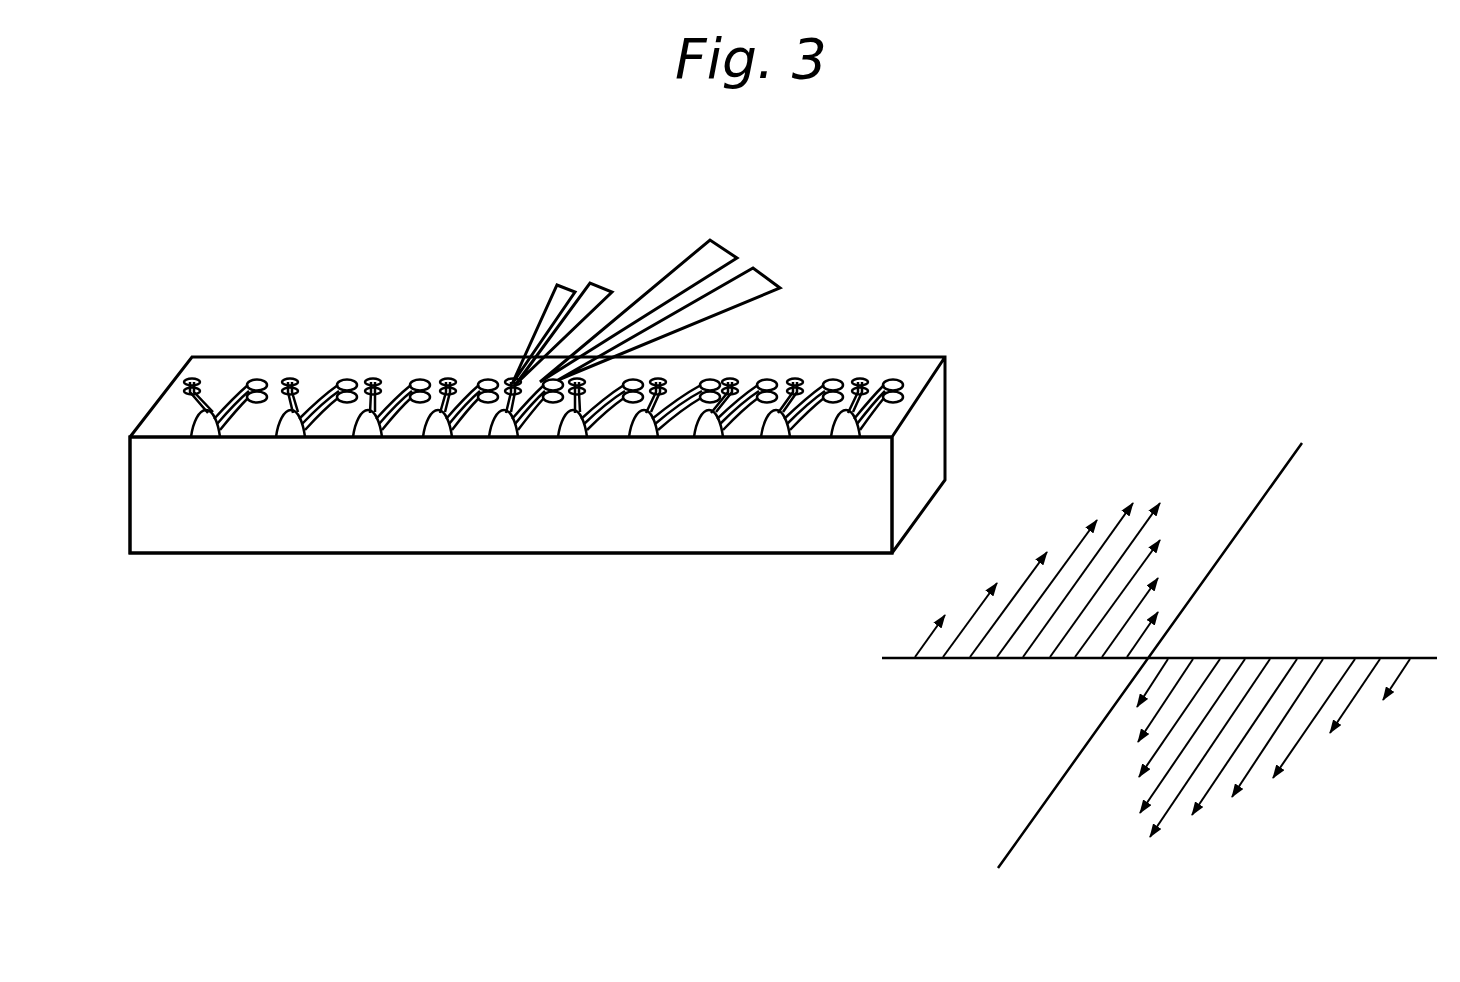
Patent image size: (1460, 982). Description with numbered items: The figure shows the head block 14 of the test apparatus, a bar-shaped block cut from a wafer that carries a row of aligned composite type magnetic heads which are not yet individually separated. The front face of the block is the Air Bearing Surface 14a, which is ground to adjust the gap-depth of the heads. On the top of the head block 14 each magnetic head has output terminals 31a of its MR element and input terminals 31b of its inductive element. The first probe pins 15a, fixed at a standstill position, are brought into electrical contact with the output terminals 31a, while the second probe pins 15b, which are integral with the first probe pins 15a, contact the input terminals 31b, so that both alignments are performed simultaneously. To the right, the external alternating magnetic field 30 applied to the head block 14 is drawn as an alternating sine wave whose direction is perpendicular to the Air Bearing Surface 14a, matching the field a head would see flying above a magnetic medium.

The head block 14 is at (932, 440).
The Air Bearing Surface (ABS) 14a is at (500, 532).
The first probe pins 15a is at (713, 247).
The second probe pins 15b is at (563, 284).
The external alternating magnetic field 30 is at (1257, 805).
The output terminals 31a is at (438, 380).
The input terminals 31b is at (376, 379).